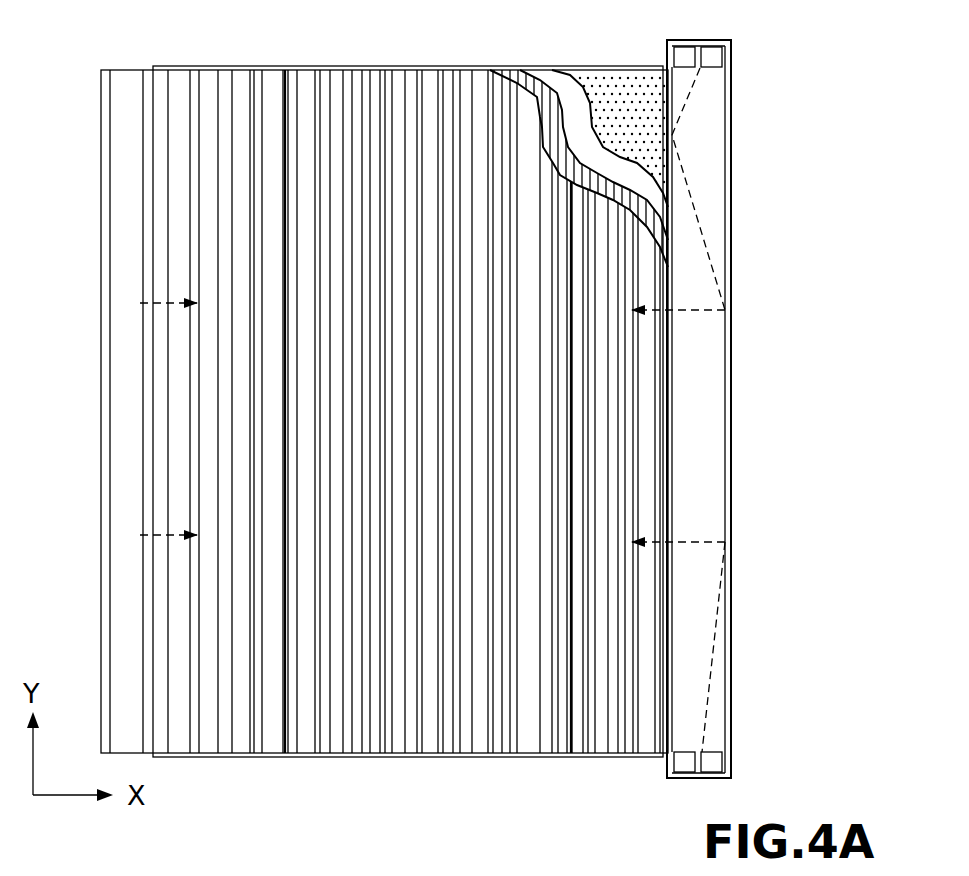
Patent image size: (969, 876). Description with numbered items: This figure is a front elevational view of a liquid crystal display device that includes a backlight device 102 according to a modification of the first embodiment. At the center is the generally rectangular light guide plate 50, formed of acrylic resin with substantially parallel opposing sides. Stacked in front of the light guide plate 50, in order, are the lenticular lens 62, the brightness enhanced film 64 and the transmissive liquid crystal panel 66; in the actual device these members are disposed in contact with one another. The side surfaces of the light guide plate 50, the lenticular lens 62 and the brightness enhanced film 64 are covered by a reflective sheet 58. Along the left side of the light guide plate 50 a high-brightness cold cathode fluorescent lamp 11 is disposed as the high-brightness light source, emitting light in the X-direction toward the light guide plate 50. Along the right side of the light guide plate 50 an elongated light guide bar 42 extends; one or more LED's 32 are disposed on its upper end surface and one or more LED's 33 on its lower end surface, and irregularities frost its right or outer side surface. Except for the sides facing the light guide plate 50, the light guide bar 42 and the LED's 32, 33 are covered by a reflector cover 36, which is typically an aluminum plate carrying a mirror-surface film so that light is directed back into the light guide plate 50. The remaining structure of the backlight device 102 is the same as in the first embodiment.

The high-brightness cold cathode fluorescent lamp 11 is at (133, 82).
The reflective sheet 58 is at (265, 66).
The light guide plate 50 is at (443, 68).
The lenticular lens 62 is at (500, 68).
The brightness enhanced film 64 is at (547, 70).
The transmissive liquid crystal panel 66 is at (615, 85).
The LED's 32 is at (687, 48).
The LED's 33 is at (685, 765).
The light guide bar 42 is at (708, 167).
The reflector cover 36 is at (732, 693).
The backlight device 102 is at (448, 413).